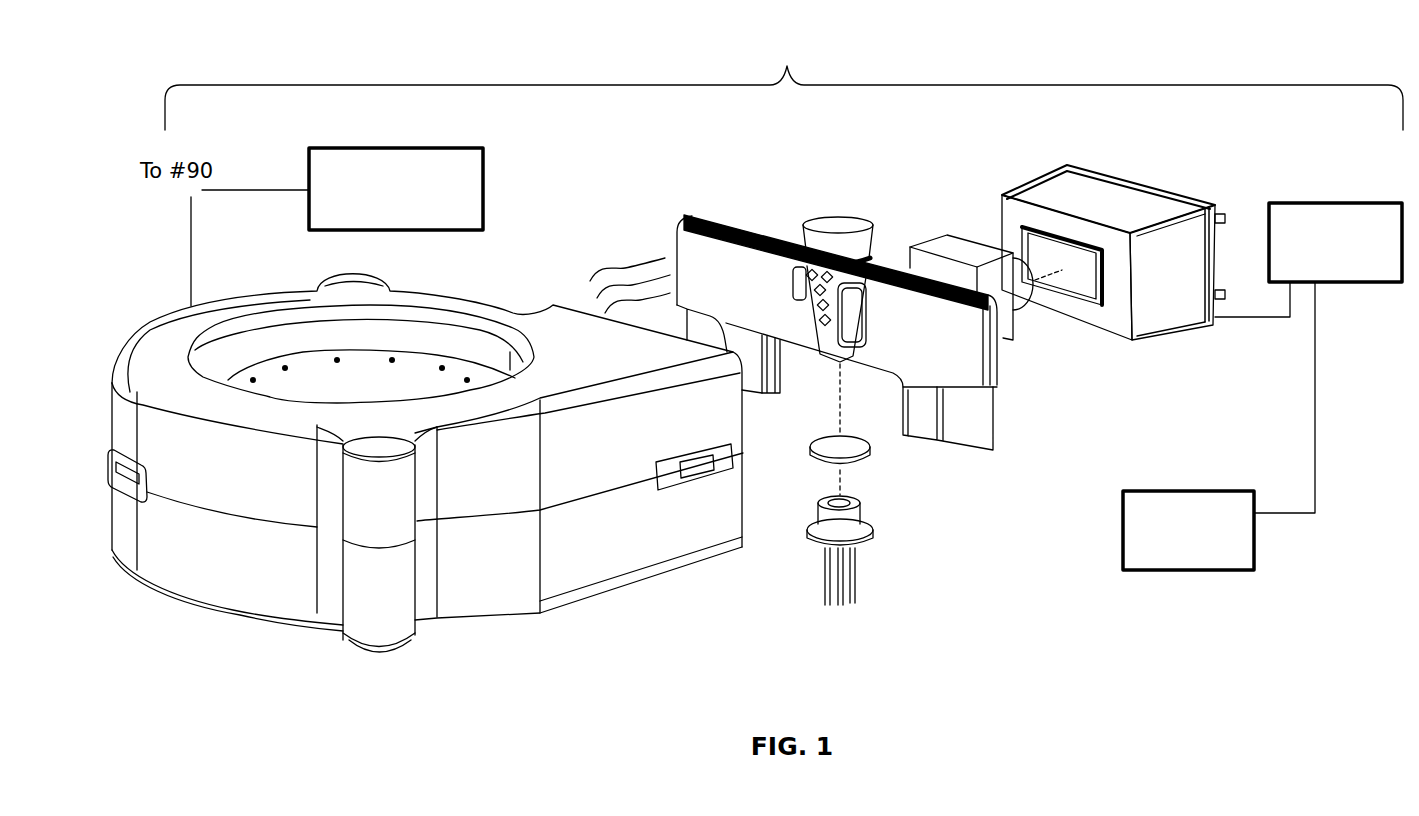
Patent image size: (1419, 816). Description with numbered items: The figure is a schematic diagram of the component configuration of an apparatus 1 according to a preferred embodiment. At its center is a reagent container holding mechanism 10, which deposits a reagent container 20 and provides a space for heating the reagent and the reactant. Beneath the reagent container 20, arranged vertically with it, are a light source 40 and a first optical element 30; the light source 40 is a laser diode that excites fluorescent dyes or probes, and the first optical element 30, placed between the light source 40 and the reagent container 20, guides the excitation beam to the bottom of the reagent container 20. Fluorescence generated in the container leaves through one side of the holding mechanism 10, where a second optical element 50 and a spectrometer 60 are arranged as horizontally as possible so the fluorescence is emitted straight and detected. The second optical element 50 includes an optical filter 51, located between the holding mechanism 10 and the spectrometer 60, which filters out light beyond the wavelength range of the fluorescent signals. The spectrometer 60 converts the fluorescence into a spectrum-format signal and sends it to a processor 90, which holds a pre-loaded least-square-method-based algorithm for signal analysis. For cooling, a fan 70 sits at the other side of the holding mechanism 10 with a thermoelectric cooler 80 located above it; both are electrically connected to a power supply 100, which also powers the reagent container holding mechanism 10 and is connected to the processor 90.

The apparatus 1 is at (784, 74).
The reagent container holding mechanism 10 is at (687, 220).
The reagent container 20 is at (823, 220).
The first optical element 30 is at (863, 468).
The light source 40 is at (860, 543).
The second optical element 50 is at (1023, 307).
The optical filter 51 is at (933, 237).
The spectrometer 60 is at (1177, 332).
The fan 70 is at (472, 620).
The thermoelectric cooler 80 is at (483, 192).
The processor 90 is at (1320, 285).
The power supply 100 is at (1200, 570).